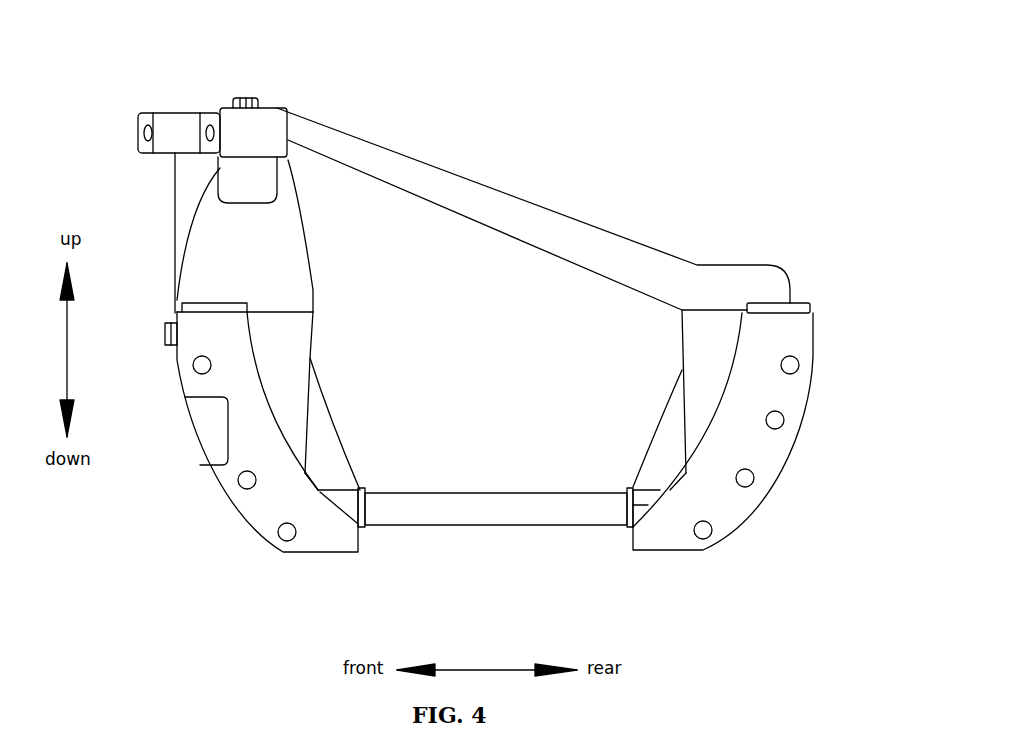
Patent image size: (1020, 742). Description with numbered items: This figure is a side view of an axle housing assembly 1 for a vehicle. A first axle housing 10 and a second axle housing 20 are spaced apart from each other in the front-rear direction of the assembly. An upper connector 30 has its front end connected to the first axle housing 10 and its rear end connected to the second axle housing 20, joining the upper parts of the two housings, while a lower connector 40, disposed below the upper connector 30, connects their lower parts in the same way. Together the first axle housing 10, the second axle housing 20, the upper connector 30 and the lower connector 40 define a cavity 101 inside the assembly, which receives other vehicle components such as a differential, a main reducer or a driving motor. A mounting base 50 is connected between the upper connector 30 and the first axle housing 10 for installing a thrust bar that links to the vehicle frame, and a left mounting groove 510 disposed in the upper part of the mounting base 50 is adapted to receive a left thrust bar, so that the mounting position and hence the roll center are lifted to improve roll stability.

The axle housing assembly 1 is at (650, 135).
The first axle housing 10 is at (272, 478).
The second axle housing 20 is at (752, 453).
The upper connector 30 is at (490, 202).
The lower connector 40 is at (498, 510).
The mounting base 50 is at (210, 240).
The left mounting groove 510 is at (178, 128).
The cavity 101 is at (483, 357).